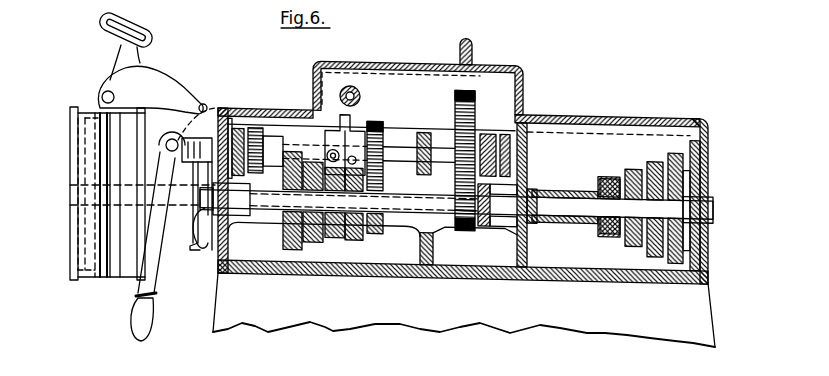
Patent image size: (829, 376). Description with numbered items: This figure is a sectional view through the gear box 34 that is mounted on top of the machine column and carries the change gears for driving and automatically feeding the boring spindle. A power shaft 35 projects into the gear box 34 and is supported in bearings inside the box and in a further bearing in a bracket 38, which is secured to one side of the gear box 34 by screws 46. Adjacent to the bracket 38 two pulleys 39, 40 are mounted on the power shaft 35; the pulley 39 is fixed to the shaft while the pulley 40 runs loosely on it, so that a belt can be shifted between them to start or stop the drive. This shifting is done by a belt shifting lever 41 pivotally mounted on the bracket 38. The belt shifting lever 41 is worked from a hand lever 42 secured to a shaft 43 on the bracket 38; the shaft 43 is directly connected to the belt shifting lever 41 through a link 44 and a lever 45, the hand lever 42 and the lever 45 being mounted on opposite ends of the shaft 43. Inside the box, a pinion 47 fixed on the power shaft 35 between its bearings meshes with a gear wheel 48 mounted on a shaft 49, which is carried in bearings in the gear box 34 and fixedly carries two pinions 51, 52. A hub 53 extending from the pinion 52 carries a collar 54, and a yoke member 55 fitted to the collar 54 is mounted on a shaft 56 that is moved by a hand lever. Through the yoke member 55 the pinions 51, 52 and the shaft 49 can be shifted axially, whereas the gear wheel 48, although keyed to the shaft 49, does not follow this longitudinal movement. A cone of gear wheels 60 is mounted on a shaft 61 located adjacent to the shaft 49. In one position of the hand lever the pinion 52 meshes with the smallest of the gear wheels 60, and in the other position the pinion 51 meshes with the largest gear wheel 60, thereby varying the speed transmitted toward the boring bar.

The gear box 34 is at (628, 140).
The power shaft 35 is at (70, 192).
The bracket 38 is at (195, 227).
The pulley 39 is at (91, 273).
The pulley 40 is at (123, 265).
The belt shifting lever 41 is at (118, 48).
The hand lever 42 is at (153, 300).
The shaft 43 is at (172, 139).
The link 44 is at (197, 96).
The lever 45 is at (213, 125).
The screws 46 is at (225, 118).
The pinion 47 is at (468, 232).
The gear wheel 48 is at (472, 88).
The shaft 49 is at (533, 158).
The pinion 51 is at (260, 128).
The pinion 52 is at (386, 122).
The hub 53 is at (355, 152).
The collar 54 is at (336, 138).
The yoke member 55 is at (345, 90).
The shaft 56 is at (350, 86).
The cone of gear wheels 60 is at (285, 230).
The shaft 61 is at (393, 214).